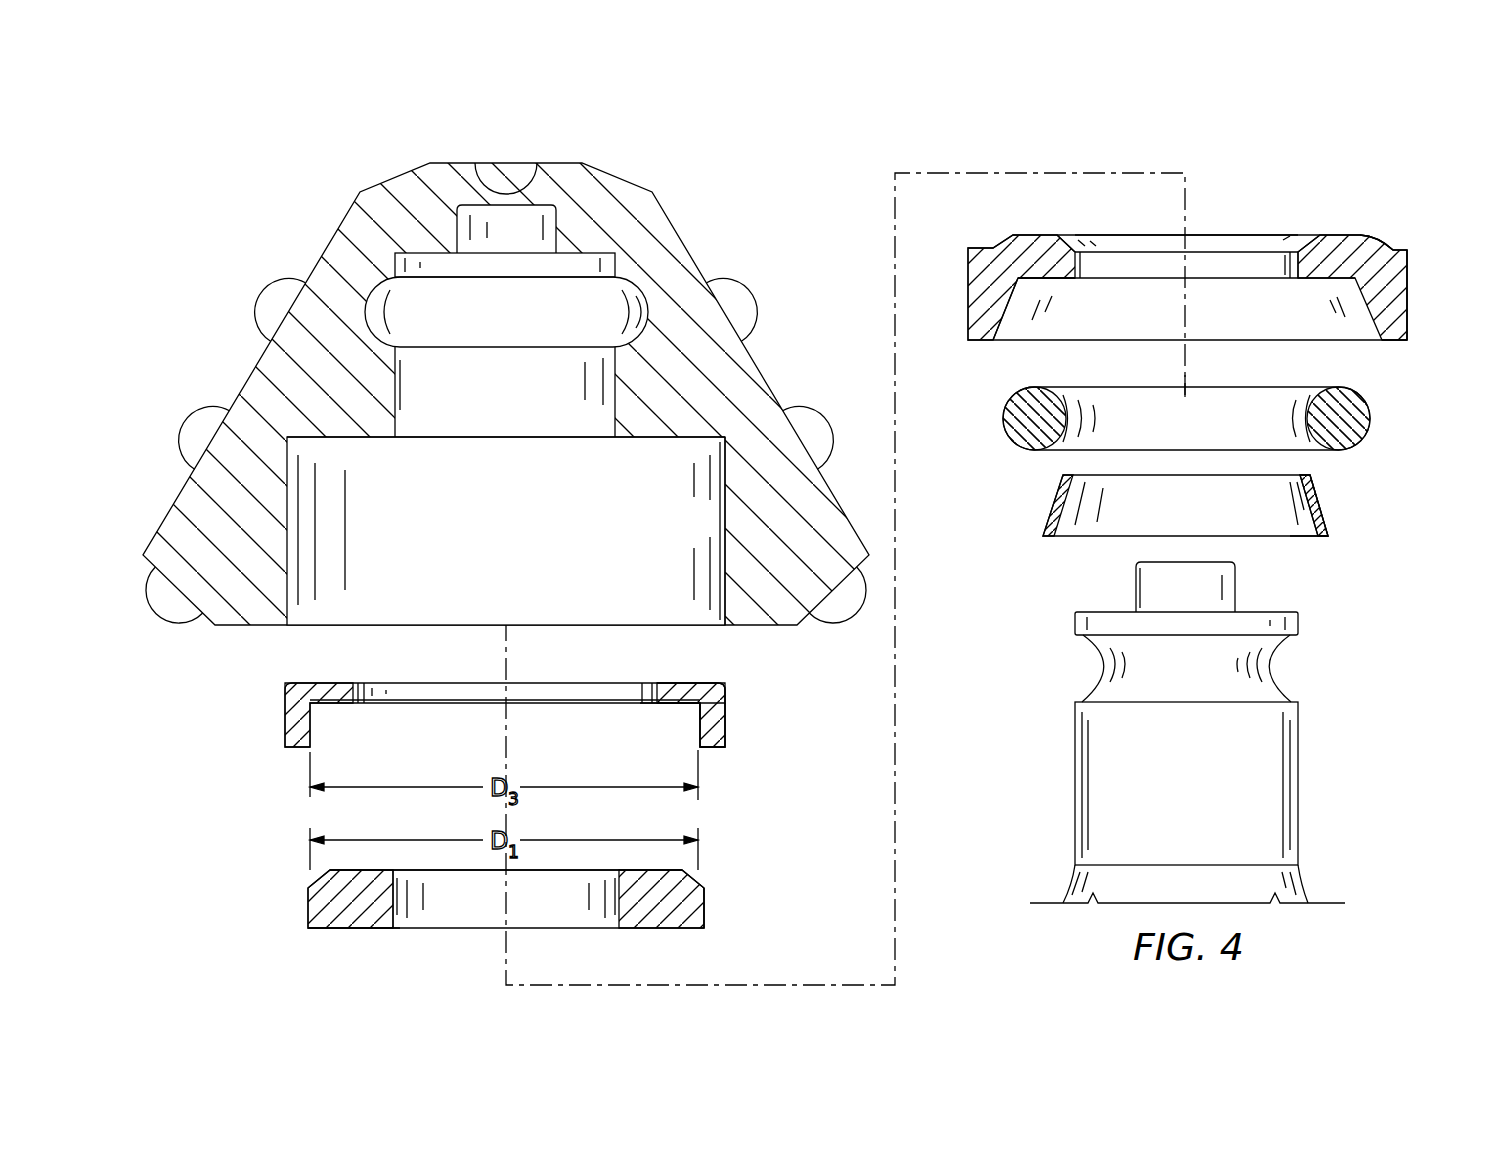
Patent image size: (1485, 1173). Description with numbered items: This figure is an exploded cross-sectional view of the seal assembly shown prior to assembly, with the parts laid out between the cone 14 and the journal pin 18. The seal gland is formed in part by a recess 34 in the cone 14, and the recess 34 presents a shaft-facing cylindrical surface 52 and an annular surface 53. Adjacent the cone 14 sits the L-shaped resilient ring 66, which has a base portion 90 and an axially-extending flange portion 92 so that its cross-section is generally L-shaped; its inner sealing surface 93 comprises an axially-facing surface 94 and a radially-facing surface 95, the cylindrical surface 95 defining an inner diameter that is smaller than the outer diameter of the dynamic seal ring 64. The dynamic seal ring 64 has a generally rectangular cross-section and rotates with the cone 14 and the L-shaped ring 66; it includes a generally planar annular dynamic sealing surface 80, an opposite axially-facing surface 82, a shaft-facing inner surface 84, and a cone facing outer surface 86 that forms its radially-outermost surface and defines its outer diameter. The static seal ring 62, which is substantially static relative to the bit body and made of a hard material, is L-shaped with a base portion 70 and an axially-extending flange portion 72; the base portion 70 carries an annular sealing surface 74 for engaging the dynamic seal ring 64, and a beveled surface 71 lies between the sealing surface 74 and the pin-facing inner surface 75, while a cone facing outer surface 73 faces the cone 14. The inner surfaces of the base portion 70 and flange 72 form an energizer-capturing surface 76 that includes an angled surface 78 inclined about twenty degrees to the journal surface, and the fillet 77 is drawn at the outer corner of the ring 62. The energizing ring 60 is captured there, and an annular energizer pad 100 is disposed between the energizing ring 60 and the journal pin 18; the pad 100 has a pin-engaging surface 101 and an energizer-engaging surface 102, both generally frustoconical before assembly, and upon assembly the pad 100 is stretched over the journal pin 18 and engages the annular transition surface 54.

The cone 14 is at (249, 379).
The recess 34 is at (437, 541).
The shaft-facing cylindrical surface 52 is at (723, 515).
The annular surface 53 is at (655, 440).
The L-shaped resilient ring 66 is at (290, 718).
The base portion 90 is at (685, 690).
The axially-extending flange portion 92 is at (720, 732).
The inner sealing surface 93 is at (680, 722).
The axially-facing surface 94 is at (665, 706).
The radially-facing surface 95 is at (700, 742).
The axially-facing surface 82 is at (365, 870).
The dynamic seal ring 64 is at (308, 905).
The dynamic sealing surface 80 is at (335, 928).
The shaft-facing inner surface 84 is at (400, 928).
The cone facing outer surface 86 is at (704, 922).
The static seal ring 62 is at (968, 286).
The beveled surface 71 is at (1070, 245).
The annular sealing surface 74 is at (1258, 235).
The fillet 77 is at (1378, 243).
The cone facing outer surface 73 is at (1407, 280).
The axially-extending flange portion 72 is at (1400, 312).
The base portion 70 is at (1320, 258).
The pin-facing inner surface 75 is at (1287, 272).
The energizer-capturing surface 76 is at (1027, 287).
The angled surface 78 is at (1010, 318).
The energizing ring 60 is at (1372, 408).
The energizer pad 100 is at (1050, 500).
The energizer-engaging surface 102 is at (1317, 490).
The pin-engaging surface 101 is at (1305, 533).
The journal pin 18 is at (1298, 800).
The annular transition surface 54 is at (1305, 885).